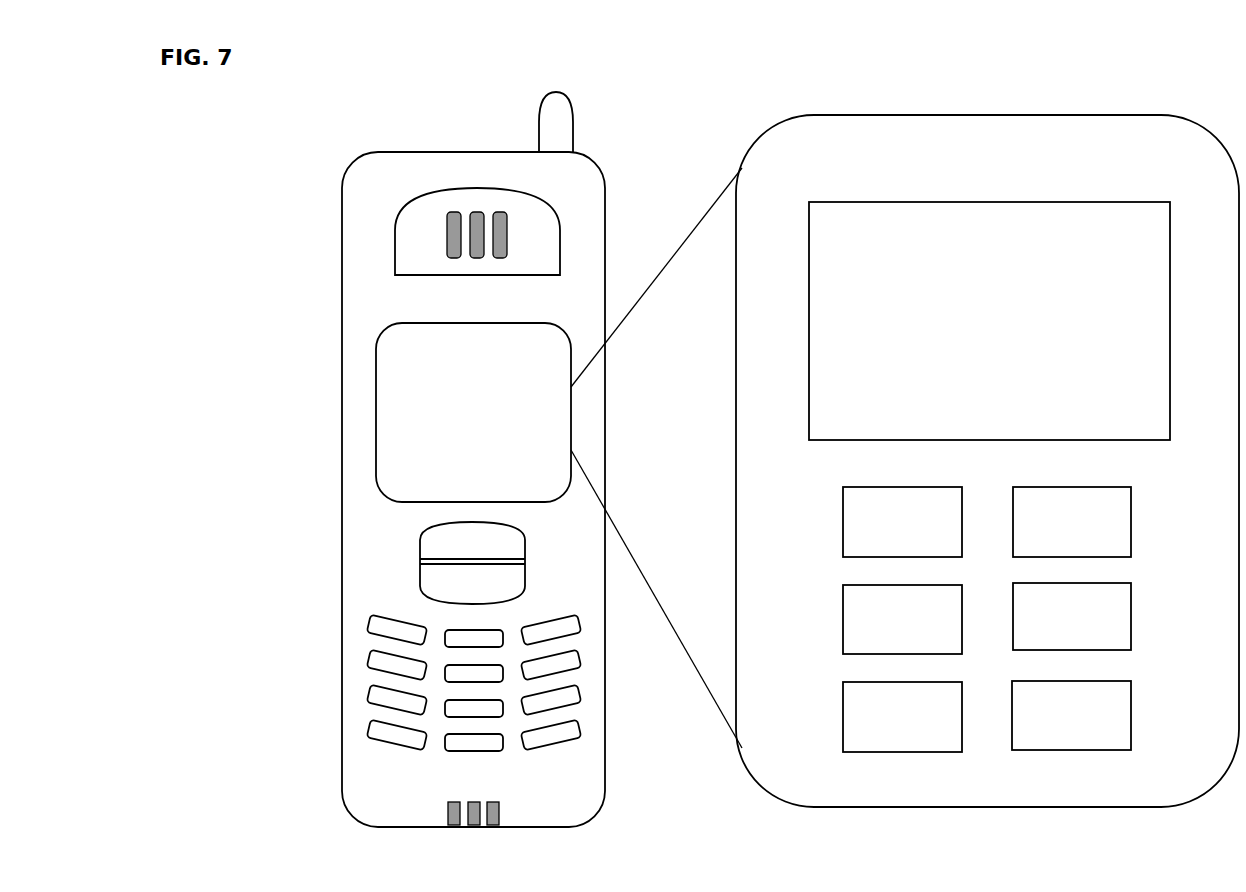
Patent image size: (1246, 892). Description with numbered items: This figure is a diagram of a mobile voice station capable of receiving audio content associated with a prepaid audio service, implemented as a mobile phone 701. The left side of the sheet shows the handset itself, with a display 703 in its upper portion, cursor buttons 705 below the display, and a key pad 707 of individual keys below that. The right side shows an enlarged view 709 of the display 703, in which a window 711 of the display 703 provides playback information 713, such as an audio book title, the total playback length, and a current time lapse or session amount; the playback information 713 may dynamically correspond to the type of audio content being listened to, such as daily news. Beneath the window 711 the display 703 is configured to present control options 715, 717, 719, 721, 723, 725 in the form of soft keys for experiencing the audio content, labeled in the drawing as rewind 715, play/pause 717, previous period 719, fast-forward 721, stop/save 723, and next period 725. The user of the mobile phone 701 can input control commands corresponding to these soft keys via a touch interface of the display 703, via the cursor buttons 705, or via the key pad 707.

The mobile phone 701 is at (605, 200).
The display 703 is at (376, 385).
The cursor buttons 705 is at (420, 548).
The key pad 707 is at (331, 608).
The enlarged display view 709 is at (1045, 115).
The window 711 is at (1107, 202).
The playback information 713 is at (1040, 233).
The control option 715 is at (843, 522).
The control option 717 is at (843, 619).
The control option 719 is at (843, 716).
The control option 721 is at (1131, 520).
The control option 723 is at (1131, 616).
The control option 725 is at (1131, 714).